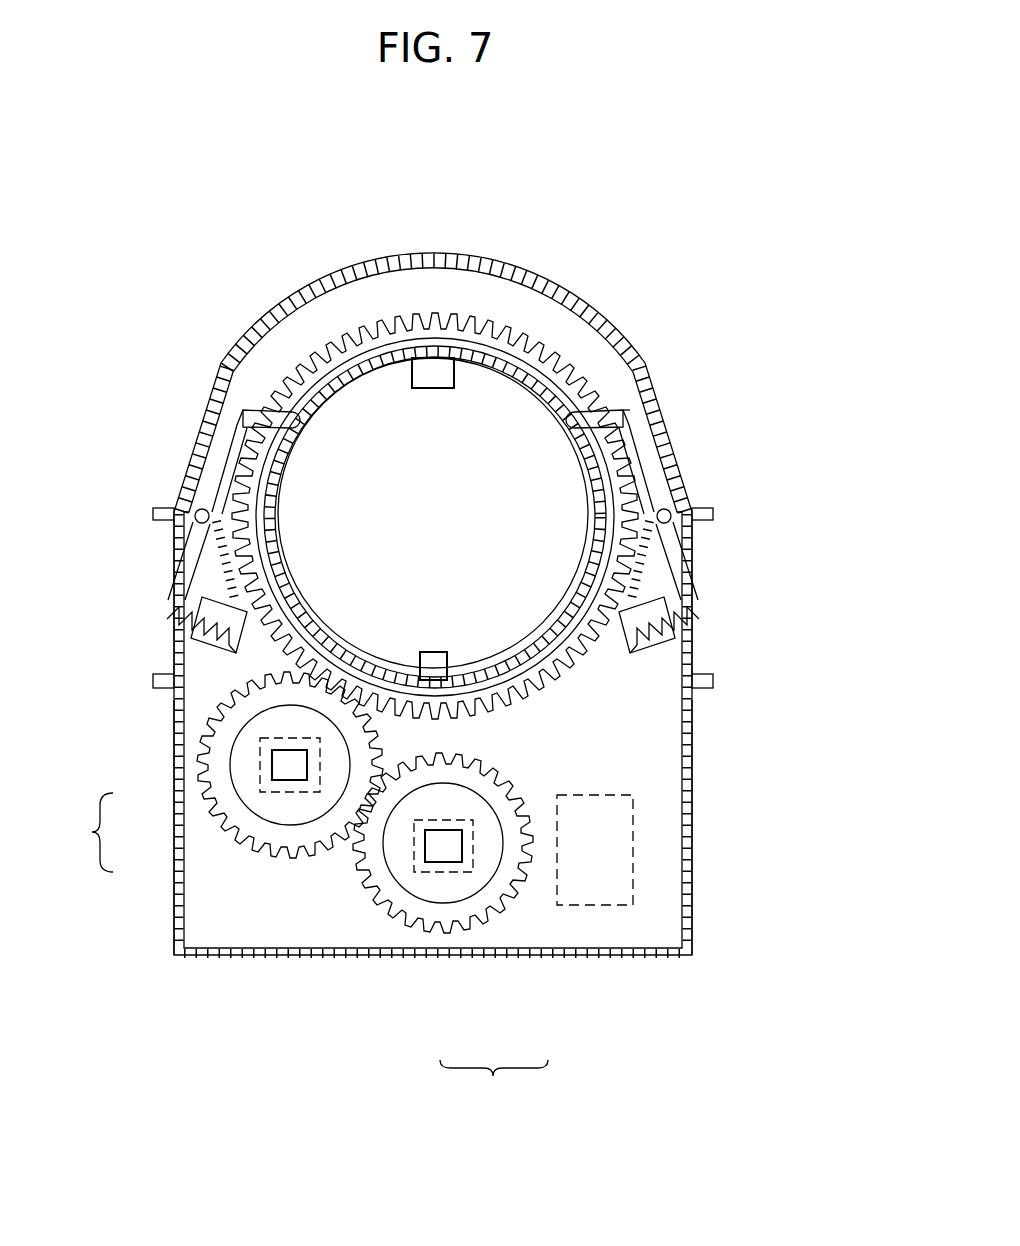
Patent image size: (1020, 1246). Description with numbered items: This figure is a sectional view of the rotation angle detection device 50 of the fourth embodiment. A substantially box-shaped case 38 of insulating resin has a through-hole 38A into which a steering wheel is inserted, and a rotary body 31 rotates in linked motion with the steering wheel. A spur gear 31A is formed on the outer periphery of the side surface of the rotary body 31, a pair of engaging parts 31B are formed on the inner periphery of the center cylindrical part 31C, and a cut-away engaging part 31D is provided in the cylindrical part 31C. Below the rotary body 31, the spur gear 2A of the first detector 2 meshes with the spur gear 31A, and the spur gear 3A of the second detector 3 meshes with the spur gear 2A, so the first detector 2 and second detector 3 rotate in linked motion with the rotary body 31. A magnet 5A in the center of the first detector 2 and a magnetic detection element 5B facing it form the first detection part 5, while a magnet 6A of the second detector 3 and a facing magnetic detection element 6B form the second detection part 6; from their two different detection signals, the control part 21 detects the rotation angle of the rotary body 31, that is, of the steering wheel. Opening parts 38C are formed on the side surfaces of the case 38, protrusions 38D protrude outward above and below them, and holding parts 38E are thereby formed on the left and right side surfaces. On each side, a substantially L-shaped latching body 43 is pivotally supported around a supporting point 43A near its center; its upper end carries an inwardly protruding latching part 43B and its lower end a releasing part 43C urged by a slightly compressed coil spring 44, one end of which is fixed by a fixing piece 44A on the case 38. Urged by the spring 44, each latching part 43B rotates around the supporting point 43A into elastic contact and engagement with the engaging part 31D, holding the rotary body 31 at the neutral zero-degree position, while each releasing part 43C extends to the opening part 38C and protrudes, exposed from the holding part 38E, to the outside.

The rotation angle detection device 50 is at (245, 300).
The case 38 is at (345, 265).
The through-hole 38A is at (344, 412).
The opening part 38C is at (175, 582).
The protrusion 38D is at (158, 514).
The holding part 38E is at (175, 548).
The rotary body 31 is at (473, 308).
The spur gear 31A is at (510, 332).
The engaging part 31B is at (432, 375).
The center cylindrical part 31C is at (520, 365).
The cut-away engaging part 31D is at (598, 410).
The latching body 43 is at (232, 457).
The supporting point 43A is at (195, 511).
The latching part 43B is at (240, 402).
The releasing part 43C is at (205, 605).
The spring 44 is at (200, 627).
The fixing piece 44A is at (235, 645).
The first detector 2 is at (245, 827).
The spur gear 2A is at (277, 848).
The second detector 3 is at (385, 898).
The spur gear 3A is at (388, 892).
The first detection part 5 is at (91, 832).
The magnet 5A is at (273, 757).
The magnetic detection element 5B is at (260, 782).
The second detection part 6 is at (494, 1080).
The magnet 6A is at (437, 853).
The magnetic detection element 6B is at (463, 870).
The control part 21 is at (610, 895).